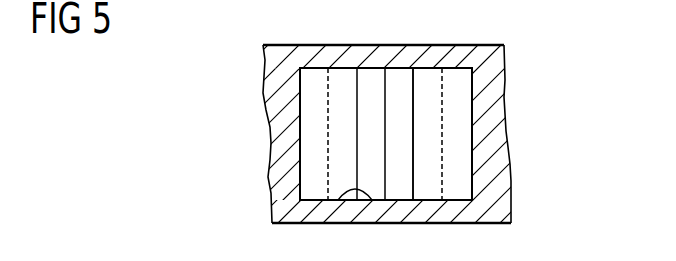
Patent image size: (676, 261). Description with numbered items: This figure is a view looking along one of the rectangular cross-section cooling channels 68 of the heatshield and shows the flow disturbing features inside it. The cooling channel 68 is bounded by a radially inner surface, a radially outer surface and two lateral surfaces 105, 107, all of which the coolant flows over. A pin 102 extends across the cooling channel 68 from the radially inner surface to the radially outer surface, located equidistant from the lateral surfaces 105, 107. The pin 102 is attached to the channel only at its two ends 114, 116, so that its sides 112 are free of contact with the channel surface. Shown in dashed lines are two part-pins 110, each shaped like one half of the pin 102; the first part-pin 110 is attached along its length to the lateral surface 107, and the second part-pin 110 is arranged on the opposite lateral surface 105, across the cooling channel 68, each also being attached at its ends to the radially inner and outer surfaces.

The cooling channel 68 is at (343, 153).
The pin 102 is at (398, 92).
The lateral surface 105 is at (468, 130).
The lateral surface 107 is at (301, 132).
The part-pin 110 is at (460, 86).
The sides of the pin 112 is at (413, 145).
The end of the pin 114 is at (372, 70).
The end of the pin 116 is at (331, 200).